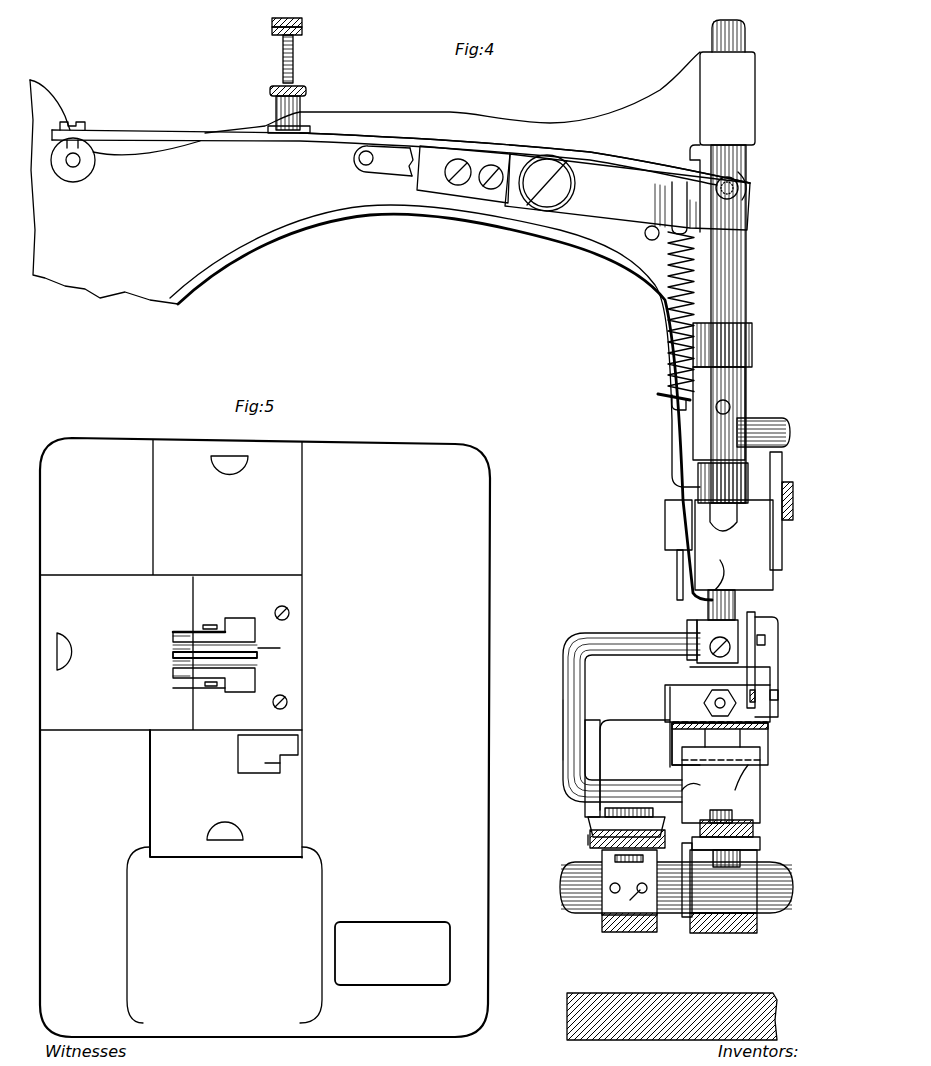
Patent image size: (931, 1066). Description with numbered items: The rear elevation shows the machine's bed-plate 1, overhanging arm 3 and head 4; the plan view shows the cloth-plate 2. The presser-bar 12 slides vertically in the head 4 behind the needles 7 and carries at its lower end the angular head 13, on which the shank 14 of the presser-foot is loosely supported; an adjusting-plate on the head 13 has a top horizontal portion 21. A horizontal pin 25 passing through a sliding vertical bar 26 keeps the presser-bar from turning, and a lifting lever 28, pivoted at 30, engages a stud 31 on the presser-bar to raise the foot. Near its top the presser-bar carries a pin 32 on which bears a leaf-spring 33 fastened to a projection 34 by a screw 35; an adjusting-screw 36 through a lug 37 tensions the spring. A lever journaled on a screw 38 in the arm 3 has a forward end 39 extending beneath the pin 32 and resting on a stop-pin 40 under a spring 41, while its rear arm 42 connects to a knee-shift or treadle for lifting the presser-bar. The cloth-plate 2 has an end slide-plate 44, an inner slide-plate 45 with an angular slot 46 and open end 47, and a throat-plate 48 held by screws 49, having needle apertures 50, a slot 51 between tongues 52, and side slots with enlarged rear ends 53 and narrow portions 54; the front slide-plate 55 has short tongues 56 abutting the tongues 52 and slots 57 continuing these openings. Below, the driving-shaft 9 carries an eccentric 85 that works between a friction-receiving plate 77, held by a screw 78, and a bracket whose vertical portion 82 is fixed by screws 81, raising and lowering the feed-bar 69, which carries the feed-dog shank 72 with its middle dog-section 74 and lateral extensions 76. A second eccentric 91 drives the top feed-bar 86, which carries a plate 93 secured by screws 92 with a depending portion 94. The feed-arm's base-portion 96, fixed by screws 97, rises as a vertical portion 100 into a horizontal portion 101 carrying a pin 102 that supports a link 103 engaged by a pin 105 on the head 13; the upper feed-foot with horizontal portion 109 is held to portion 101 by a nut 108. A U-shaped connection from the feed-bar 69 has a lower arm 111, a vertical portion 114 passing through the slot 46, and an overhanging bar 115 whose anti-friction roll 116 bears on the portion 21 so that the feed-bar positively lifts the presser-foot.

In FIG. 4, the bed-plate 1 is at (575, 1012).
In FIG. 5, the cloth-plate 2 is at (470, 583).
In FIG. 4, the overhanging arm 3 is at (280, 213).
In FIG. 4, the head 4 is at (660, 348).
In FIG. 4, the needles 7 is at (673, 560).
In FIG. 4, the driving-shaft 9 is at (575, 910).
In FIG. 4, the presser-bar 12 is at (730, 265).
In FIG. 4, the angular head 13 is at (712, 635).
In FIG. 4, the shank of the presser-foot 14 is at (700, 625).
In FIG. 4, the top horizontal portion of adjusting-plate 21 is at (690, 630).
In FIG. 4, the horizontal pin 25 is at (715, 410).
In FIG. 4, the vertical bar 26 is at (722, 395).
In FIG. 4, the presser-foot-lifting lever 28 is at (770, 540).
In FIG. 4, the pivot 30 is at (782, 478).
In FIG. 4, the stud or pin 31 is at (760, 425).
In FIG. 4, the pin or bar 32 is at (740, 188).
In FIG. 4, the leaf-spring 33 is at (640, 162).
In FIG. 4, the projection 34 is at (85, 170).
In FIG. 4, the screw or pin 35 is at (82, 123).
In FIG. 4, the adjusting-screw 36 is at (300, 70).
In FIG. 4, the lug 37 is at (308, 103).
In FIG. 4, the screw or pin 38 is at (549, 198).
In FIG. 4, the forward end of lever 39 is at (635, 205).
In FIG. 4, the stop-pin 40 is at (648, 240).
In FIG. 4, the spring 41 is at (668, 398).
In FIG. 4, the rear arm of lever 42 is at (430, 178).
In FIG. 5, the end slide-plate 44 is at (290, 513).
In FIG. 5, the inner slide-plate 45 is at (285, 813).
In FIG. 5, the angular slot 46 is at (280, 763).
In FIG. 5, the open end 47 is at (290, 745).
In FIG. 5, the throat-plate 48 is at (280, 648).
In FIG. 5, the screws 49 is at (290, 610).
In FIG. 5, the needle apertures 50 is at (210, 625).
In FIG. 5, the slot 51 is at (257, 655).
In FIG. 5, the tongues 52 is at (240, 646).
In FIG. 5, the enlarged rear ends 53 is at (240, 630).
In FIG. 5, the narrow portions 54 is at (195, 637).
In FIG. 5, the front slide-plate 55 is at (108, 718).
In FIG. 5, the short tongues 56 is at (173, 648).
In FIG. 5, the slots 57 is at (173, 636).
In FIG. 4, the feed-bar 69 is at (755, 828).
In FIG. 4, the shank of the feed-dog 72 is at (721, 785).
In FIG. 4, the middle dog-section 74 is at (745, 738).
In FIG. 4, the lateral extension 76 is at (672, 755).
In FIG. 4, the friction-receiving plate 77 is at (708, 845).
In FIG. 4, the screw 78 is at (712, 808).
In FIG. 4, the screws 81 is at (735, 862).
In FIG. 4, the vertical portion of bracket 82 is at (728, 917).
In FIG. 4, the eccentric 85 is at (685, 910).
In FIG. 4, the top feed-bar 86 is at (590, 840).
In FIG. 4, the eccentric 91 is at (605, 920).
In FIG. 4, the screws 92 is at (618, 862).
In FIG. 4, the plate 93 is at (595, 848).
In FIG. 4, the depending portion 94 is at (630, 900).
In FIG. 4, the horizontal base-portion 96 is at (590, 825).
In FIG. 4, the screws 97 is at (605, 812).
In FIG. 4, the vertical portion of feed-arm 100 is at (575, 790).
In FIG. 4, the horizontal portion of feed-arm 101 is at (650, 712).
In FIG. 4, the pin 102 is at (778, 695).
In FIG. 4, the link 103 is at (750, 660).
In FIG. 4, the pin 105 is at (760, 607).
In FIG. 4, the nut 108 is at (705, 700).
In FIG. 4, the horizontal portion of feed-foot 109 is at (680, 735).
In FIG. 4, the lower arm 111 is at (702, 784).
In FIG. 4, the vertical portion 114 is at (566, 725).
In FIG. 4, the overhanging bar 115 is at (610, 640).
In FIG. 4, the anti-friction roll 116 is at (697, 640).